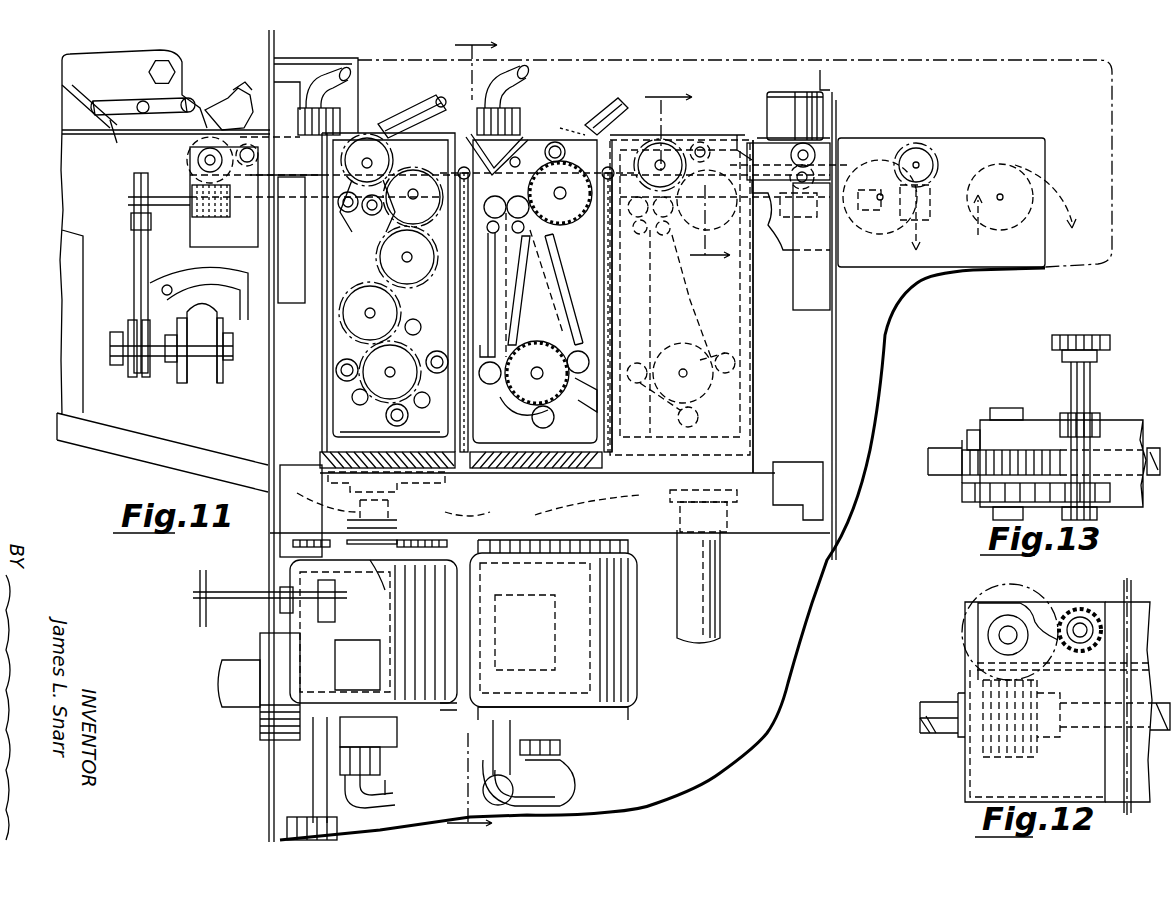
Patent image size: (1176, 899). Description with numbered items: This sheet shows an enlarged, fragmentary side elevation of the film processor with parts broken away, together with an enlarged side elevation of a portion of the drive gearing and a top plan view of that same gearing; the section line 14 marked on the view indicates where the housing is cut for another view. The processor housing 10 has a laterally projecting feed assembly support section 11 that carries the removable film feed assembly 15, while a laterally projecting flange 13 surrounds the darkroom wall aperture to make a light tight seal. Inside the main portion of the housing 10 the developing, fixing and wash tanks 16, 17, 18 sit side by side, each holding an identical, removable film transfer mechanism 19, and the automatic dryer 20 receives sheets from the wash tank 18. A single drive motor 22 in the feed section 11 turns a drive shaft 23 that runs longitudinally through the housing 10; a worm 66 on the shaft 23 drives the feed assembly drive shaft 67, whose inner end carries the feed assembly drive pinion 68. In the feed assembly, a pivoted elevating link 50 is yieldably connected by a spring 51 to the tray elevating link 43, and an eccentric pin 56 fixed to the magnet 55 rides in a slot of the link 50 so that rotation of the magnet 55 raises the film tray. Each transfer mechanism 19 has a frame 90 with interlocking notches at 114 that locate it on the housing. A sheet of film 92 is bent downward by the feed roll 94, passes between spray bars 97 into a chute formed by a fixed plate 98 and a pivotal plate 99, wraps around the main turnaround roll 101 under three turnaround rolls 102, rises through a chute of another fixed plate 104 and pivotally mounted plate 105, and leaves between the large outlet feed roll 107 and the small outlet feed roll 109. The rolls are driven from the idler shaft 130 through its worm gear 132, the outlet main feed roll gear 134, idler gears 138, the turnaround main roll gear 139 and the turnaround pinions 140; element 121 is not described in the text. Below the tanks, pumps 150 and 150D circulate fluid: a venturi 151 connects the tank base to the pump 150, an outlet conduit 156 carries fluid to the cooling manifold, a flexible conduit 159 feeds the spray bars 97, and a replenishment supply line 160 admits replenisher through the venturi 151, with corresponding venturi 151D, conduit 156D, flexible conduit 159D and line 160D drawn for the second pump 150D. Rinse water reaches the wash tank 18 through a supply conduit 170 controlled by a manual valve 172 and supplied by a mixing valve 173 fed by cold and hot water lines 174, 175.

In FIG. 11, the film processor housing 10 is at (317, 46).
In FIG. 11, the feed assembly support section 11 is at (122, 460).
In FIG. 11, the laterally projecting flange 13 is at (276, 46).
In FIG. 11, the section line 14- 14 is at (472, 436).
In FIG. 11, the film feed assembly 15 is at (171, 40).
In FIG. 11, the developing tank 16 is at (318, 445).
In FIG. 11, the fixing tank 17 is at (463, 486).
In FIG. 11, the wash tank 18 is at (755, 450).
In FIG. 11, the film transfer mechanism 19 is at (397, 52).
In FIG. 11, the automatic dryer 20 is at (999, 121).
In FIG. 11, the drive motor 22 is at (180, 390).
In FIG. 11, the drive shaft 23 is at (130, 200).
In FIG. 13, the drive shaft 23 is at (945, 472).
In FIG. 12, the drive shaft 23 is at (932, 702).
In FIG. 11, the tray elevating link 43 is at (70, 112).
In FIG. 11, the pivoted elevating link 50 is at (124, 100).
In FIG. 11, the spring 51 is at (127, 140).
In FIG. 11, the magnet 55 is at (226, 98).
In FIG. 11, the eccentric pin 56 is at (193, 98).
In FIG. 11, the worm 66 is at (200, 218).
In FIG. 12, the worm 66 is at (1012, 758).
In FIG. 11, the feed assembly drive shaft 67 is at (247, 163).
In FIG. 13, the feed assembly drive shaft 67 is at (1068, 376).
In FIG. 12, the feed assembly drive shaft 67 is at (1083, 622).
In FIG. 13, the feed assembly drive pinion 68 is at (1050, 343).
In FIG. 11, the frame 90 is at (745, 384).
In FIG. 11, the sheet of film 92 is at (333, 273).
In FIG. 11, the downwardly directing feed roll 94 is at (531, 288).
In FIG. 11, the spray bars 97 is at (648, 236).
In FIG. 11, the fixed plate 98 is at (524, 300).
In FIG. 11, the pivotal plate 99 is at (508, 330).
In FIG. 11, the main turnaround roll 101 is at (555, 418).
In FIG. 11, the turnaround rolls 102 is at (582, 350).
In FIG. 11, the fixed plate 104 is at (552, 275).
In FIG. 11, the pivotally mounted plate 105 is at (560, 252).
In FIG. 11, the outlet feed roll 107 is at (565, 225).
In FIG. 11, the small diameter outlet feed roll 109 is at (565, 128).
In FIG. 11, the interlocking notches 114 is at (765, 130).
In FIG. 11, the plate 121 is at (348, 426).
In FIG. 11, the idler shaft 130 is at (372, 155).
In FIG. 11, the worm gear 132 is at (352, 192).
In FIG. 11, the outlet main feed roll gear 134 is at (409, 227).
In FIG. 11, the idler gears 138 is at (398, 312).
In FIG. 11, the turnaround main roll gear 139 is at (372, 378).
In FIG. 11, the turnaround pinions 140 is at (336, 370).
In FIG. 11, the pump 150 is at (640, 655).
In FIG. 11, the pump 150D is at (447, 712).
In FIG. 11, the venturi 151 is at (585, 515).
In FIG. 11, the mounting bracket 151D is at (390, 505).
In FIG. 11, the outlet conduit 156 is at (520, 812).
In FIG. 11, the pipe 156D is at (312, 783).
In FIG. 11, the flexible conduit 159 is at (615, 98).
In FIG. 11, the fitting 159D is at (446, 84).
In FIG. 11, the replenishment supply line 160 is at (585, 500).
In FIG. 11, the belt 160D is at (297, 520).
In FIG. 11, the rinse water supply conduit 170 is at (510, 64).
In FIG. 11, the manually actuatable valve 172 is at (320, 600).
In FIG. 11, the mixing valve 173 is at (263, 728).
In FIG. 11, the cold water supply line 174 is at (385, 792).
In FIG. 11, the hot water supply line 175 is at (397, 762).